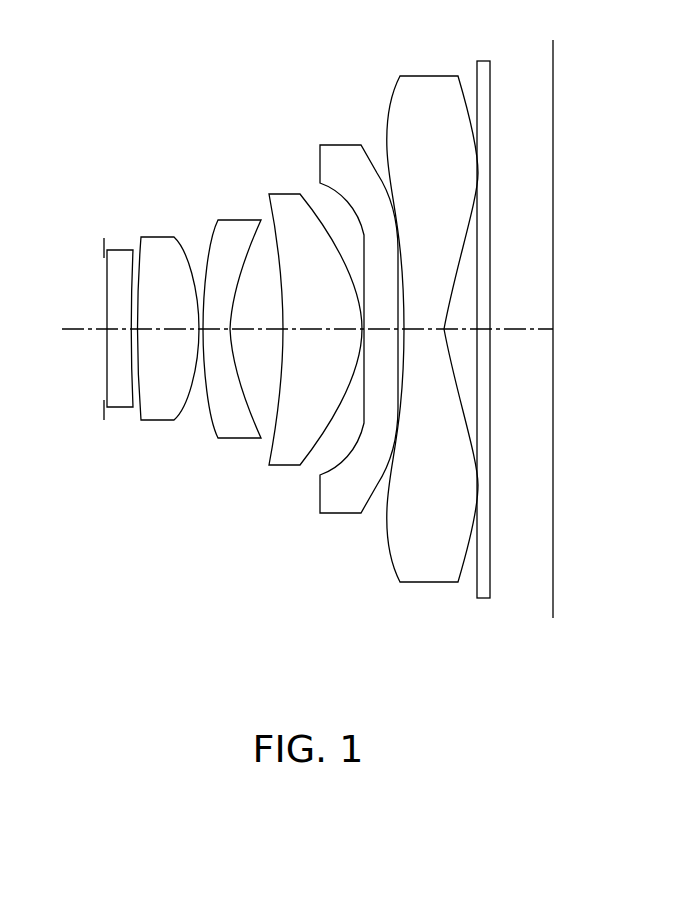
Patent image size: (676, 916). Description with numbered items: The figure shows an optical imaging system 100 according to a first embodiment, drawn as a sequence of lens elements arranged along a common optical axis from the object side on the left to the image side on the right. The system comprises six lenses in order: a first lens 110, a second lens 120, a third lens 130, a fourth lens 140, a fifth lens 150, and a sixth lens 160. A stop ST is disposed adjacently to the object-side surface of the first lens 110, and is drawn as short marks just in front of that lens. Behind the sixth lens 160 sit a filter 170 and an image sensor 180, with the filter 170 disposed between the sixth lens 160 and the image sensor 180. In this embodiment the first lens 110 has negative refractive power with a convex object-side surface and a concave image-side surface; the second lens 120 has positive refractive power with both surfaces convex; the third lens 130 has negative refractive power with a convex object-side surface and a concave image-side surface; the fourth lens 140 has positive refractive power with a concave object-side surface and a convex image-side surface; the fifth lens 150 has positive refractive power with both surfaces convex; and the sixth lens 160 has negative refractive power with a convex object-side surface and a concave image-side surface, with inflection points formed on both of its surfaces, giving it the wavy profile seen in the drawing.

The optical imaging system 100 is at (238, 133).
The stop ST is at (103, 246).
The first lens 110 is at (120, 408).
The second lens 120 is at (160, 422).
The third lens 130 is at (240, 438).
The fourth lens 140 is at (285, 465).
The fifth lens 150 is at (340, 515).
The sixth lens 160 is at (428, 583).
The filter 170 is at (477, 587).
The image sensor 180 is at (552, 598).